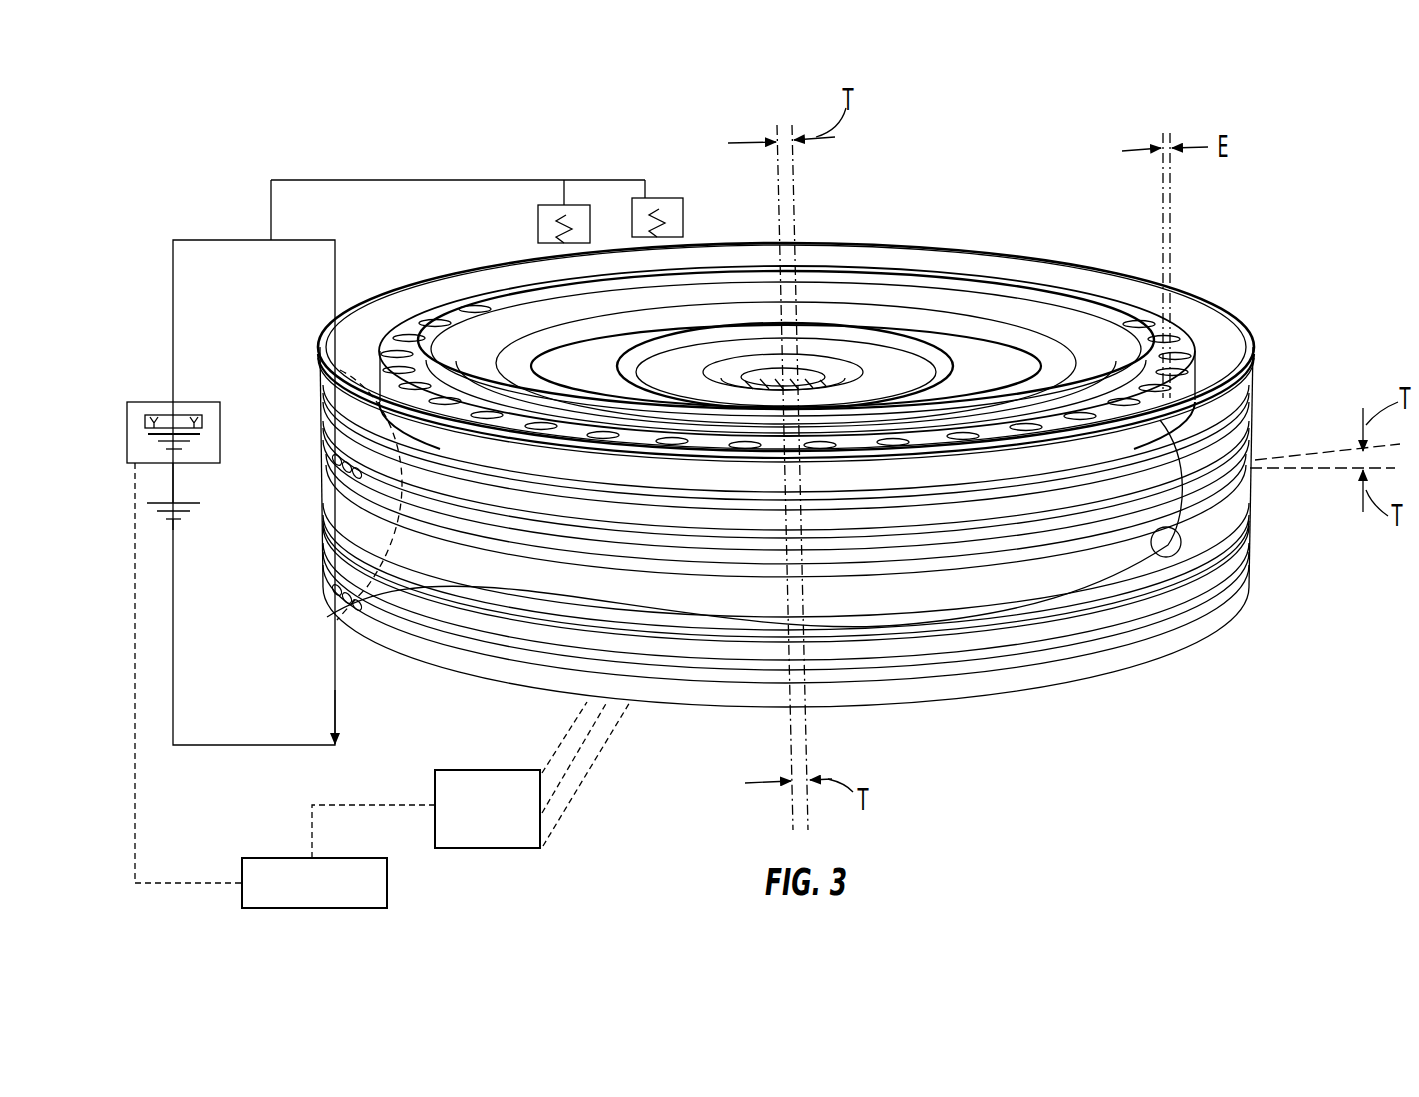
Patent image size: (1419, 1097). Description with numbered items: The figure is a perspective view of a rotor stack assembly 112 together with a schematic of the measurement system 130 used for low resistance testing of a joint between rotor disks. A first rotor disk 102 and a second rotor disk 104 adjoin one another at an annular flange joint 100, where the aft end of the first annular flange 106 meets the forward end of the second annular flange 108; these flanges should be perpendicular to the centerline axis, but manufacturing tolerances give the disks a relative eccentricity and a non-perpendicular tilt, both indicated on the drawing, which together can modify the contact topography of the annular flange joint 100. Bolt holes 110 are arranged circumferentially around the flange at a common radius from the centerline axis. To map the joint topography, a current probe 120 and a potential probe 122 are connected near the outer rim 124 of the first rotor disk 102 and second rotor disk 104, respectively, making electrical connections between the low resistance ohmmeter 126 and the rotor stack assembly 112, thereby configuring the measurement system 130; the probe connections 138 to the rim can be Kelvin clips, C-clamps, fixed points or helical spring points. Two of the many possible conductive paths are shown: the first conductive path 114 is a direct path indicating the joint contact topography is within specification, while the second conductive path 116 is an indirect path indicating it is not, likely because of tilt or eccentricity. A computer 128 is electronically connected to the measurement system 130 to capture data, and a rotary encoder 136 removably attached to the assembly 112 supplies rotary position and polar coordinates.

The annular flange joint 100 is at (1264, 455).
The first rotor disk 102 is at (1243, 385).
The second rotor disk 104 is at (1210, 553).
The first annular flange 106 is at (1188, 360).
The second annular flange 108 is at (1144, 681).
The bolt holes 110 is at (428, 342).
The rotor stack assembly 112 is at (1006, 184).
The first conductive path 114 is at (410, 493).
The second conductive path 116 is at (620, 603).
The current probe 120 is at (335, 287).
The potential probe 122 is at (335, 700).
The outer rim 124 is at (476, 262).
The low resistance ohmmeter 126 is at (212, 447).
The computer 128 is at (296, 899).
The measurement system 130 is at (222, 214).
The rotary encoder 136 is at (468, 826).
The resistive elements 138 is at (577, 212).